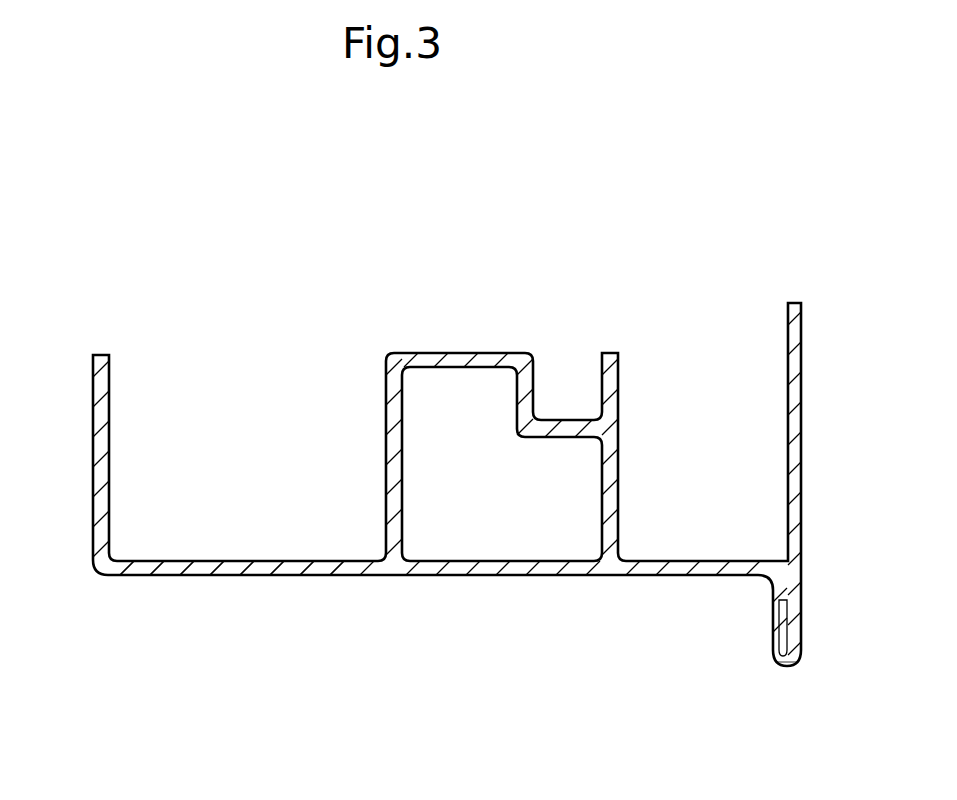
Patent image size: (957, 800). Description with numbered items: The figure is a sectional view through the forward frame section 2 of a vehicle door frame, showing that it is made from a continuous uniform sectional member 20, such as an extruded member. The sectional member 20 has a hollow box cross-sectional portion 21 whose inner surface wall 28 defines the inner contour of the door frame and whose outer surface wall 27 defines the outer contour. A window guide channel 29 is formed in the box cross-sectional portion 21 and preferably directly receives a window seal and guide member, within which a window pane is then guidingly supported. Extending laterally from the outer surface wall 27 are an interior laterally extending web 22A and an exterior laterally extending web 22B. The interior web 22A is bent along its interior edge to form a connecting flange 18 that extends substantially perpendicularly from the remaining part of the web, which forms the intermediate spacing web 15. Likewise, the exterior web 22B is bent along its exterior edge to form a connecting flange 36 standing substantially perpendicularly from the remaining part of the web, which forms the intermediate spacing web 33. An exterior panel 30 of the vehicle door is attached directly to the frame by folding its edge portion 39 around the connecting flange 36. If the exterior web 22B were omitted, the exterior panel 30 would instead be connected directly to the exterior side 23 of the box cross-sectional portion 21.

The forward frame section 2 is at (333, 350).
The intermediate spacing web 15 is at (303, 590).
The connecting flange 18 is at (93, 415).
The sectional member 20 is at (372, 578).
The box cross-sectional portion 21 is at (505, 342).
The interior laterally extending web 22A is at (202, 563).
The exterior laterally extending web 22B is at (642, 566).
The exterior side 23 is at (618, 470).
The outer surface wall 27 is at (530, 568).
The inner surface wall 28 is at (455, 355).
The window guide channel 29 is at (560, 405).
The exterior panel 30 is at (801, 430).
The intermediate spacing web 33 is at (703, 575).
The connecting flange 36 is at (783, 607).
The edge portion 39 is at (790, 668).